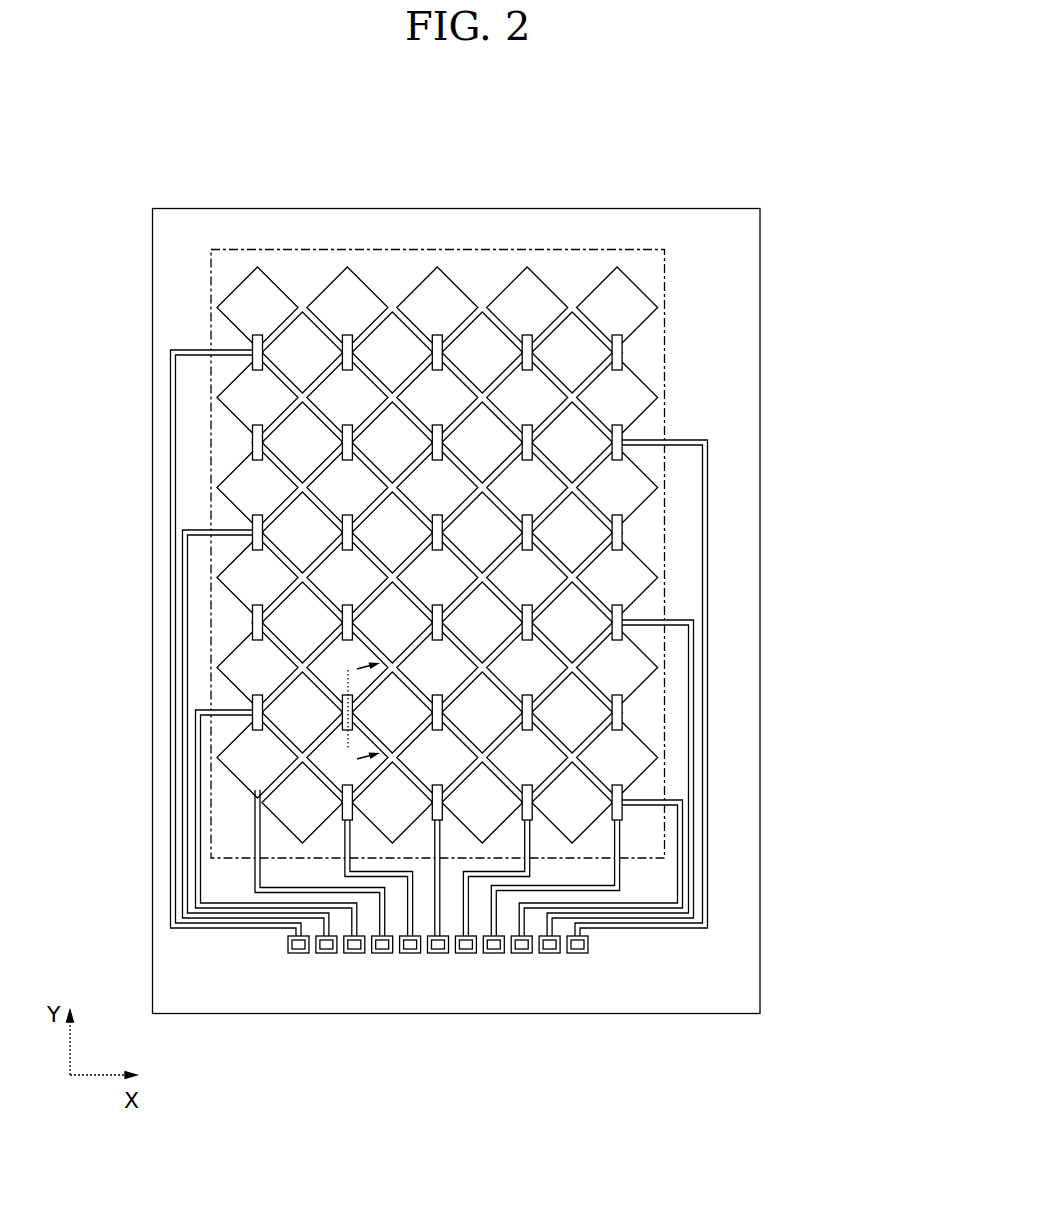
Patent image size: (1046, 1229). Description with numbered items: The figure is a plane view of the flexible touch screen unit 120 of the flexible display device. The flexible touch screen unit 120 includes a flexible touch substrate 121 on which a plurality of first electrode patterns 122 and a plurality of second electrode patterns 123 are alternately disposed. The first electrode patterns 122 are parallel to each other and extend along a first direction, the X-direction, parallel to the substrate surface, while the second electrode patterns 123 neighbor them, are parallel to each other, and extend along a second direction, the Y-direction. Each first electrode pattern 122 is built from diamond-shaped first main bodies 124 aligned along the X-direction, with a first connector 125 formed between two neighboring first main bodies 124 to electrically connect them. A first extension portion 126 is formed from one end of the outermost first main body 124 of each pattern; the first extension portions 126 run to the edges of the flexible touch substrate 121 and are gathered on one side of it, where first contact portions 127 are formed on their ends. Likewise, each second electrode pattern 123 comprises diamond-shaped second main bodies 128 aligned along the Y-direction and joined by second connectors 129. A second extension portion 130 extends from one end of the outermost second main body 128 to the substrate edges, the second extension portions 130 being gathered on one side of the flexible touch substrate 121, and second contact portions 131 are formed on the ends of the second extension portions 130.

The flexible touch screen unit 120 is at (680, 125).
The flexible touch substrate 121 is at (523, 208).
The first electrode patterns 122 is at (526, 632).
The second electrode patterns 123 is at (350, 610).
The first main bodies 124 is at (582, 797).
The first connectors 125 is at (617, 820).
The first extension portions 126 is at (678, 830).
The first contact portions 127 is at (588, 938).
The second main bodies 128 is at (330, 757).
The second connectors 129 is at (343, 790).
The second extension portions 130 is at (393, 870).
The second contact portions 131 is at (397, 937).